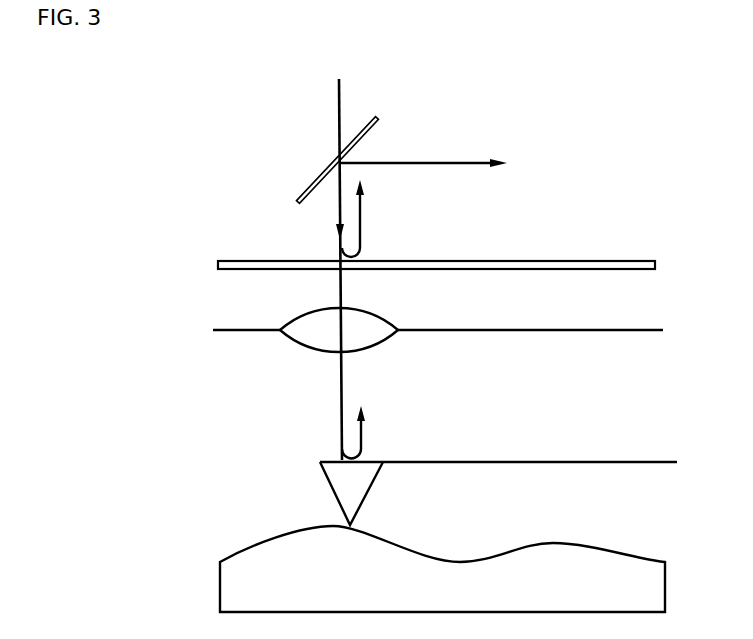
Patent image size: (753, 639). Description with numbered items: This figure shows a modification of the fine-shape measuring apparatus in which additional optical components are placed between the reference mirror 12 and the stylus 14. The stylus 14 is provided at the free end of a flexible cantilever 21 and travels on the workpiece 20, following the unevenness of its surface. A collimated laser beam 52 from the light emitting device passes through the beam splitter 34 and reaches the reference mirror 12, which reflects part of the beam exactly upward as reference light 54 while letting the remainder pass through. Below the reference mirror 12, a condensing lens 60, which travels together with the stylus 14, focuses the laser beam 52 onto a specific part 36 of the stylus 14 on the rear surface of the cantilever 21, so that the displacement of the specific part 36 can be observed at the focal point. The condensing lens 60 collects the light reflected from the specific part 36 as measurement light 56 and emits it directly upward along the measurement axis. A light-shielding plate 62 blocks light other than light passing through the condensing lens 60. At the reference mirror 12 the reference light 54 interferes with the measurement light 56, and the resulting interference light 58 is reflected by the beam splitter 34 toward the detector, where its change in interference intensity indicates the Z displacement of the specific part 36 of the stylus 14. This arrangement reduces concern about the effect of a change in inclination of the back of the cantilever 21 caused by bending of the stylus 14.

The reference mirror 12 is at (651, 261).
The stylus 14 is at (367, 500).
The workpiece 20 is at (262, 537).
The cantilever 21 is at (662, 432).
The beam splitter 34 is at (297, 192).
The specific part of the stylus 36 is at (340, 458).
The laser beam 52 is at (339, 100).
The reference light 54 is at (363, 242).
The measurement light 56 is at (364, 440).
The interference light 58 is at (455, 163).
The condensing lens 60 is at (383, 345).
The light-shielding plate 62 is at (656, 331).